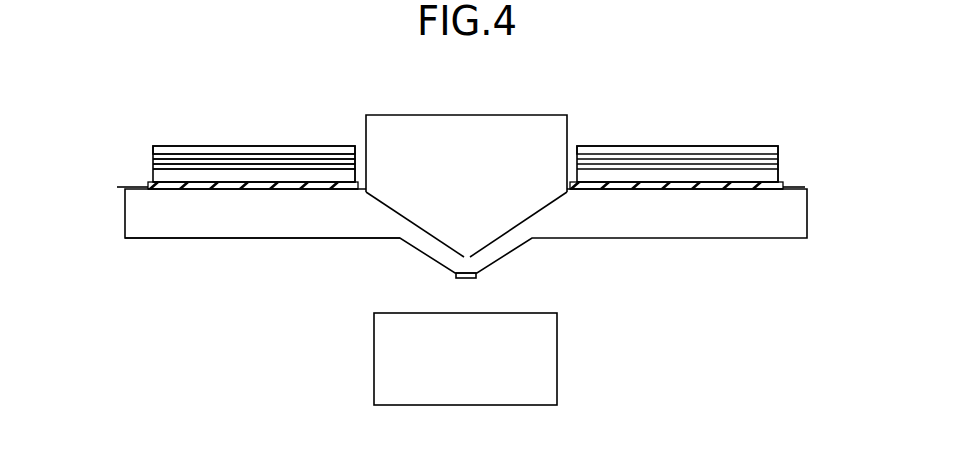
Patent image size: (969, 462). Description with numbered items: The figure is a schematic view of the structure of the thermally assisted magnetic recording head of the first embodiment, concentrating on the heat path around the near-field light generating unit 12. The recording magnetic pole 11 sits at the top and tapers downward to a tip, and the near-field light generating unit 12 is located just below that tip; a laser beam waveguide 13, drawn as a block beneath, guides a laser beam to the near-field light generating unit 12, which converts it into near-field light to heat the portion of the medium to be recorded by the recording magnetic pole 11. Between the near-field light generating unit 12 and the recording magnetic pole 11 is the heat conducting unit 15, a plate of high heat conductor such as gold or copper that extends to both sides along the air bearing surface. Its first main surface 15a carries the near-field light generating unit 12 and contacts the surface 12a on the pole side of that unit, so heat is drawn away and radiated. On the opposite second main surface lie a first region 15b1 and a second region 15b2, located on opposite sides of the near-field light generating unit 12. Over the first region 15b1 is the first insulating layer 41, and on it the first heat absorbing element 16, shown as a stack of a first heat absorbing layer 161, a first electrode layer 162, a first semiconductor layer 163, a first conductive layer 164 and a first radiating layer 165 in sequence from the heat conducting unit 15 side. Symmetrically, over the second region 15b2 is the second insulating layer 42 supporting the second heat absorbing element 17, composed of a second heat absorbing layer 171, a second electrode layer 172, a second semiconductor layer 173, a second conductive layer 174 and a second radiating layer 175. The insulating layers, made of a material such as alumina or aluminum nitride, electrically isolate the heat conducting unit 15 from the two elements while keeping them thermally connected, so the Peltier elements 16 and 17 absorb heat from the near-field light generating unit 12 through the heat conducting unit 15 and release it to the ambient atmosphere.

The recording magnetic pole 11 is at (470, 128).
The near-field light generating unit 12 is at (467, 278).
The surface on the recording magnetic pole side of the near-field light generating u 12a is at (478, 262).
The laser beam waveguide 13 is at (545, 360).
The heat conducting unit 15 is at (133, 222).
The first main surface 15a is at (161, 245).
The first region 15b1 is at (704, 180).
The second region 15b2 is at (254, 184).
The first heat absorbing element 16 is at (734, 126).
The first heat absorbing layer 161 is at (716, 176).
The first electrode layer 162 is at (778, 167).
The first semiconductor layer 163 is at (778, 162).
The first conductive layer 164 is at (778, 157).
The first radiating layer 165 is at (778, 150).
The second heat absorbing element 17 is at (200, 126).
The second heat absorbing layer 171 is at (219, 176).
The second electrode layer 172 is at (153, 167).
The second semiconductor layer 173 is at (153, 162).
The second conductive layer 174 is at (153, 157).
The second radiating layer 175 is at (153, 150).
The first insulating layer 41 is at (808, 187).
The second insulating layer 42 is at (122, 187).